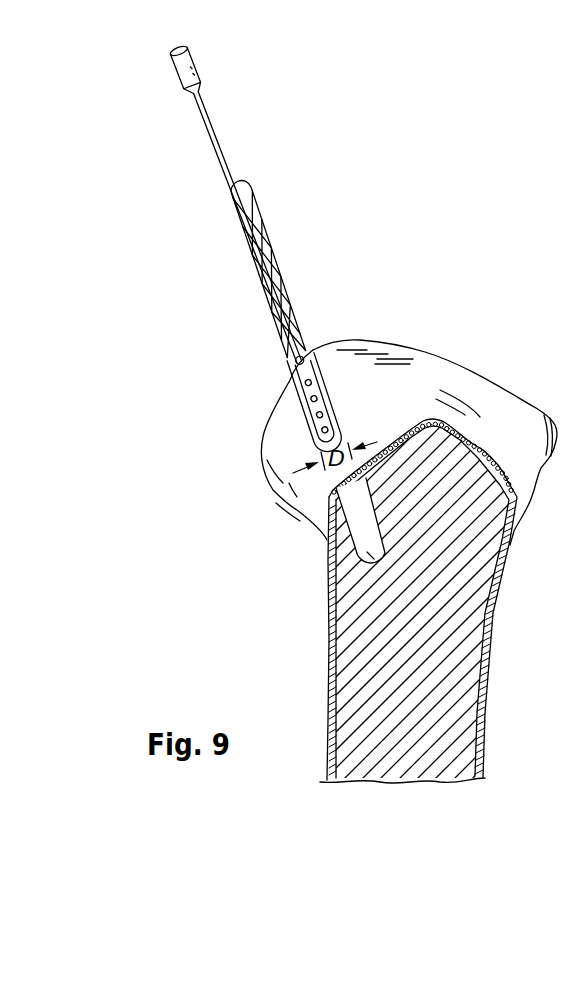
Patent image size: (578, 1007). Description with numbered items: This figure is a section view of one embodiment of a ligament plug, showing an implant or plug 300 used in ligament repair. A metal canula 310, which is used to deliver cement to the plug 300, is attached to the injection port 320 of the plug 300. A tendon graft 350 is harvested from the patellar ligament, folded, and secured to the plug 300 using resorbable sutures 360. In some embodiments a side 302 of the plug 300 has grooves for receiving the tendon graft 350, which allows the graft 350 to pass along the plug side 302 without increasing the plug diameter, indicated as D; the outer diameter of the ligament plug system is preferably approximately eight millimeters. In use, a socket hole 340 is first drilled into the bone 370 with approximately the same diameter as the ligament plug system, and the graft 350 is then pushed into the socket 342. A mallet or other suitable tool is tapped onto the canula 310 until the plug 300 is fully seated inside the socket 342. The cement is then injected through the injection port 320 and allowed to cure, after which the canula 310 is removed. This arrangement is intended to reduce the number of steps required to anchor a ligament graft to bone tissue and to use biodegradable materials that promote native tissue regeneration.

The plug 300 is at (255, 249).
The side of the plug 302 is at (323, 388).
The metal canula 310 is at (172, 76).
The injection port 320 is at (290, 352).
The socket hole 340 is at (335, 408).
The socket 342 is at (361, 534).
The tendon graft 350 is at (295, 320).
The resorbable sutures 360 is at (267, 252).
The bone 370 is at (530, 445).